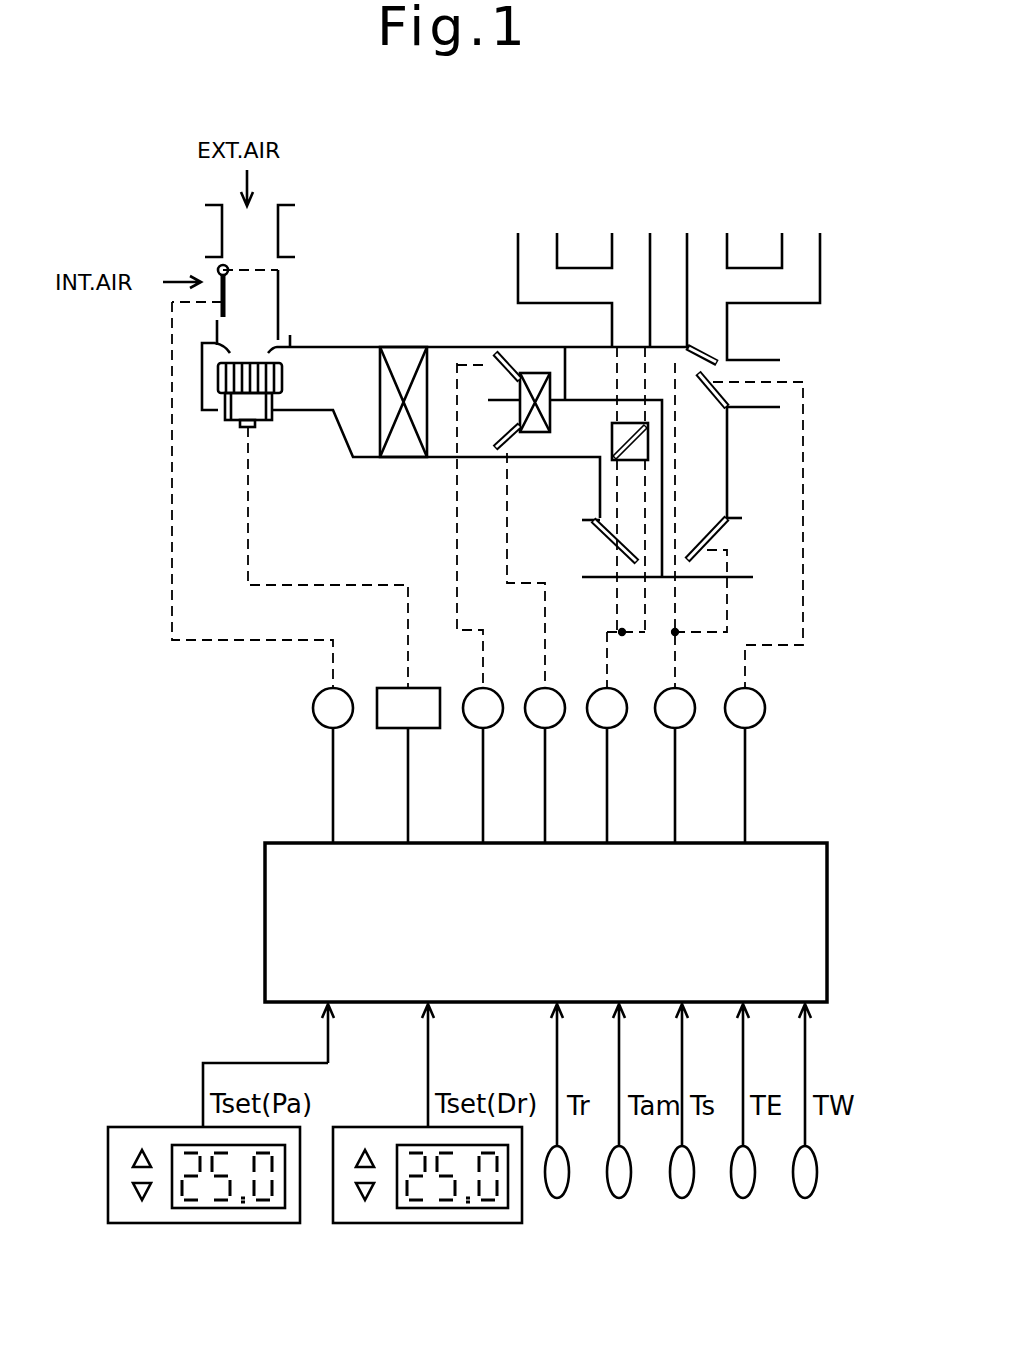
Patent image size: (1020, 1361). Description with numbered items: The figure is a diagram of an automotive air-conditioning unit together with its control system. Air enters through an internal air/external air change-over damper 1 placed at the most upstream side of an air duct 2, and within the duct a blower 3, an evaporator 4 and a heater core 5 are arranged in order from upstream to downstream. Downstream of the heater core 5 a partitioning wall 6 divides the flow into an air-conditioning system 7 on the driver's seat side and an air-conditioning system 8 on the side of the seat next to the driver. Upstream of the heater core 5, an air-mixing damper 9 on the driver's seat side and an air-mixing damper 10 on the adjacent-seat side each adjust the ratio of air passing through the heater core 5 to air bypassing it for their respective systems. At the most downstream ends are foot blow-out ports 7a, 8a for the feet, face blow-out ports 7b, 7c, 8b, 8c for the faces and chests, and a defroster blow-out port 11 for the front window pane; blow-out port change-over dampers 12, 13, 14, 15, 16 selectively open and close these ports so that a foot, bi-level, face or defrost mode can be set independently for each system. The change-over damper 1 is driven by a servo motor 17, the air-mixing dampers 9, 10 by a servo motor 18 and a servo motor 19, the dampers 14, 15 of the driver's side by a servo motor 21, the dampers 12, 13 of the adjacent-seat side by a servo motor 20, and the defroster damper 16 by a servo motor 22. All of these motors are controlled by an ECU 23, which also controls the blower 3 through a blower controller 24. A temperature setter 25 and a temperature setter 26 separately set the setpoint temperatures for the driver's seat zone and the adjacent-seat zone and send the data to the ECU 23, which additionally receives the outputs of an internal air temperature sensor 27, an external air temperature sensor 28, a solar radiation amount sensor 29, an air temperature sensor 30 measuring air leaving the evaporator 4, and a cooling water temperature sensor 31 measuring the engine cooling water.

The internal air/external air change-over damper 1 is at (222, 308).
The air duct 2 is at (332, 347).
The blower 3 is at (218, 385).
The evaporator 4 is at (380, 425).
The heater core 5 is at (538, 432).
The partitioning wall 6 is at (565, 392).
The air-conditioning system on the driver's seat side 7 is at (575, 443).
The air-conditioning system on the side of the seat next to the driver 8 is at (600, 365).
The air-mixing damper on the driver's seat side 9 is at (490, 435).
The air-mixing damper on the side of the seat next to the driver 10 is at (495, 353).
The defroster blow-out port 11 is at (775, 372).
The blow-out port change-over damper 12 is at (690, 560).
The blow-out port change-over damper 13 is at (706, 352).
The blow-out port change-over damper 14 is at (612, 545).
The blow-out port change-over damper 15 is at (640, 460).
The defroster blow-out port change-over damper 16 is at (735, 395).
The servo motor 17 is at (322, 727).
The servo motor 18 is at (535, 725).
The servo motor 19 is at (470, 728).
The servo motor 20 is at (690, 720).
The servo motor 21 is at (622, 720).
The servo motor 22 is at (760, 720).
The ECU (electronic control unit) 23 is at (830, 925).
The blower controller 24 is at (397, 730).
The temperature setter on the driver's seat side 25 is at (500, 1223).
The temperature setter on the side of the seat next to the driver 26 is at (277, 1223).
The internal air temperature sensor 27 is at (557, 1198).
The external air temperature sensor 28 is at (619, 1198).
The solar radiation amount sensor 29 is at (682, 1198).
The air temperature sensor 30 is at (743, 1198).
The cooling water temperature sensor 31 is at (805, 1198).
The foot blow-out port 7a is at (580, 577).
The face blow-out port 7b is at (633, 250).
The face blow-out port 7c is at (537, 250).
The foot blow-out port 8a is at (735, 576).
The face blow-out port 8b is at (705, 247).
The face blow-out port 8c is at (795, 247).